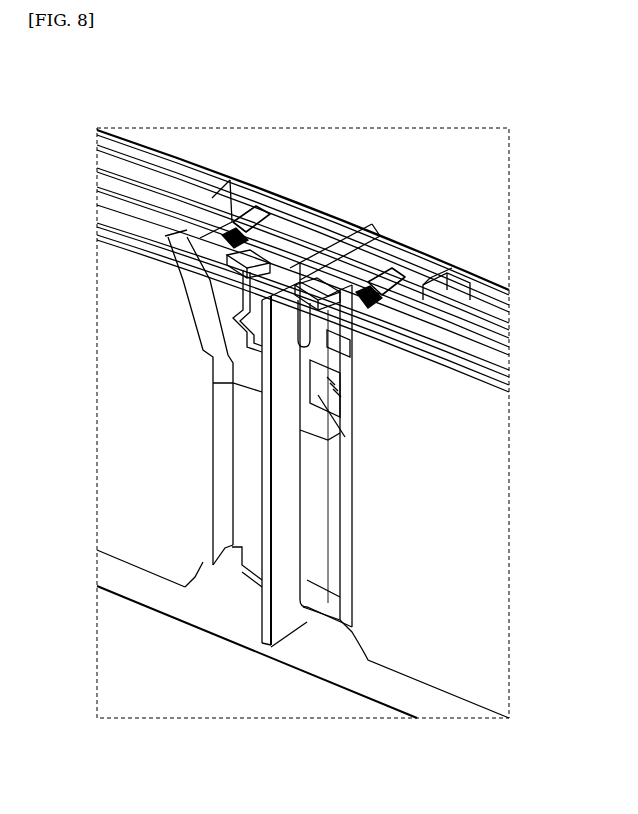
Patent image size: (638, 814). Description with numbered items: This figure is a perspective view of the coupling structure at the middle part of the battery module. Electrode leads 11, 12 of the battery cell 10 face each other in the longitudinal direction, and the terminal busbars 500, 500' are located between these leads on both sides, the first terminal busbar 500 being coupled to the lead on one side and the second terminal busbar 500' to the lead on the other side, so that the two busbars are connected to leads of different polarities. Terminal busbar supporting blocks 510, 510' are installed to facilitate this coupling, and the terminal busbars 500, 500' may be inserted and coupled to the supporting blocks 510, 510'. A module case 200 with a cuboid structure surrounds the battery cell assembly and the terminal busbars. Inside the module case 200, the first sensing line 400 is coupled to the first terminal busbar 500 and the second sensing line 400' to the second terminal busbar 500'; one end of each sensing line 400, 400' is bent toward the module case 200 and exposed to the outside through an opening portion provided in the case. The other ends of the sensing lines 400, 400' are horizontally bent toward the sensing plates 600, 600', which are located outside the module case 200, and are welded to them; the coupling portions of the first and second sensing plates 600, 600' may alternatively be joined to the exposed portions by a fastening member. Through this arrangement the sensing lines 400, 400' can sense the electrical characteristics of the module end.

The battery cell 10 is at (156, 162).
The electrode lead 11 is at (252, 535).
The electrode lead 12 is at (317, 560).
The module case 200 is at (440, 258).
The first sensing line 400 is at (426, 377).
The second sensing line 400' is at (149, 306).
The first terminal busbar 500 is at (427, 441).
The second terminal busbar 500' is at (149, 474).
The terminal busbar supporting block 510 is at (425, 337).
The terminal busbar supporting block 510' is at (153, 277).
The first sensing plate 600 is at (396, 254).
The second sensing plate 600' is at (260, 197).